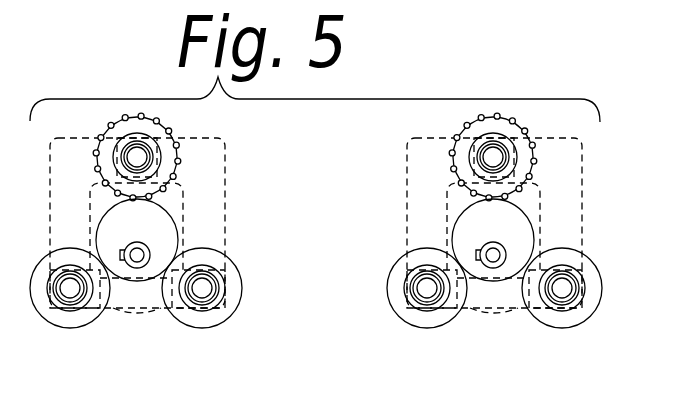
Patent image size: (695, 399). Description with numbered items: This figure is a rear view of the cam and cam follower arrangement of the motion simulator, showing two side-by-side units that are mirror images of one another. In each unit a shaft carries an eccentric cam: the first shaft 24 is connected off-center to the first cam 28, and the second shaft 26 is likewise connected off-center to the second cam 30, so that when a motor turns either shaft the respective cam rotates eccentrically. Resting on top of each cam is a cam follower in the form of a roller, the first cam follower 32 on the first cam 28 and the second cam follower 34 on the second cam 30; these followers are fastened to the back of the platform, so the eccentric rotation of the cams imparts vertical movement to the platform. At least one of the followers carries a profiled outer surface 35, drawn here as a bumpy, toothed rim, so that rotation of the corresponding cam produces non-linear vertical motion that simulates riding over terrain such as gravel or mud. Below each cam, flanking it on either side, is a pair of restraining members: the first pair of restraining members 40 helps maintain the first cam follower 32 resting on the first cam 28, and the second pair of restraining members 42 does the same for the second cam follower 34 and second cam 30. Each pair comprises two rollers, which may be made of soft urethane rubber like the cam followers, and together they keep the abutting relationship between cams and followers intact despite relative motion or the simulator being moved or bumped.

The first shaft 24 is at (152, 252).
The second shaft 26 is at (505, 252).
The first cam 28 is at (167, 229).
The second cam 30 is at (463, 236).
The first cam follower 32 is at (170, 133).
The second cam follower 34 is at (400, 138).
The profiled outer surface 35 is at (103, 125).
The first pair of restraining members 40 is at (168, 337).
The second pair of restraining members 42 is at (526, 337).